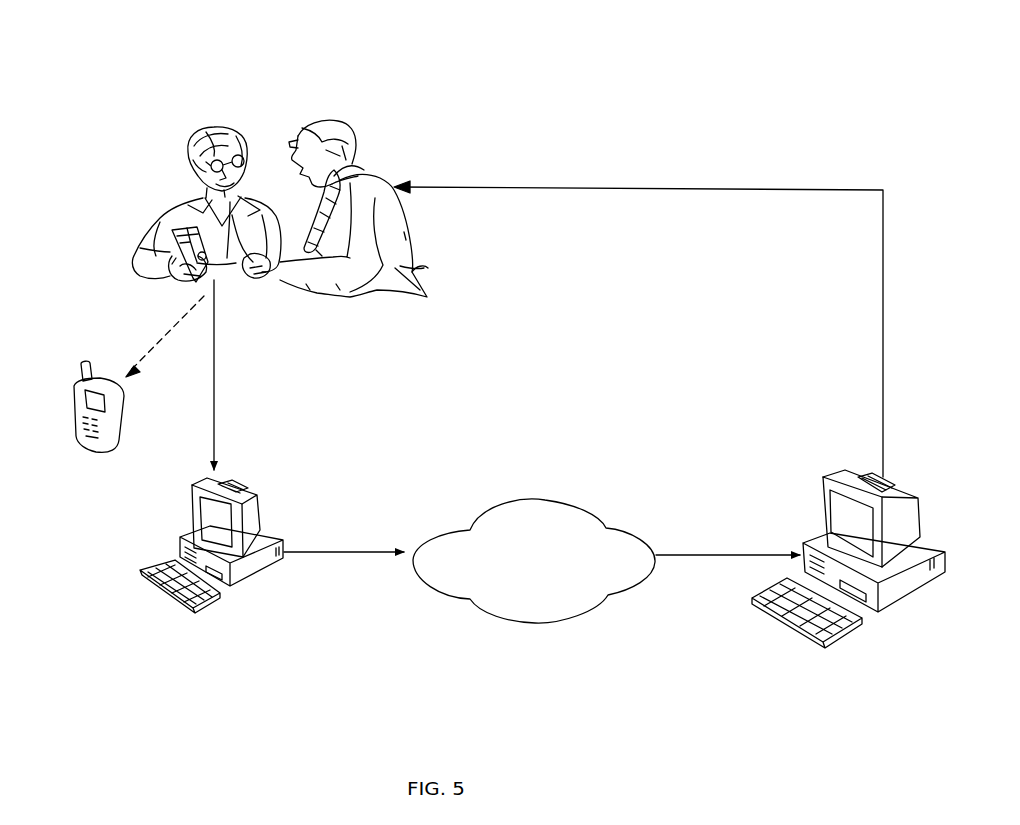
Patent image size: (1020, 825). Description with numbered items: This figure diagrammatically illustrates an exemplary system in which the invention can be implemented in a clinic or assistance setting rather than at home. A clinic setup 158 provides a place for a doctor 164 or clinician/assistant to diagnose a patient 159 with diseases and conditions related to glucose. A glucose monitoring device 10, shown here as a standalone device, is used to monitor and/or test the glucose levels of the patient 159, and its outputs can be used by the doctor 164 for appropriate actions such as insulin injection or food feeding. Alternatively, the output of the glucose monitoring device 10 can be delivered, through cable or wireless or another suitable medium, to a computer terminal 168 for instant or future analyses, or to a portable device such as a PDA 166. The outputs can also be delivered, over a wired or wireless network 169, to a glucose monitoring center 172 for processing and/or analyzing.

The clinic setup 158 is at (273, 88).
The patient 159 is at (191, 128).
The glucose monitoring device 10 is at (170, 234).
The doctor 164 is at (386, 182).
The PDA 166 is at (85, 360).
The computer terminal 168 is at (258, 490).
The network 169 is at (548, 500).
The glucose monitoring center 172 is at (823, 474).